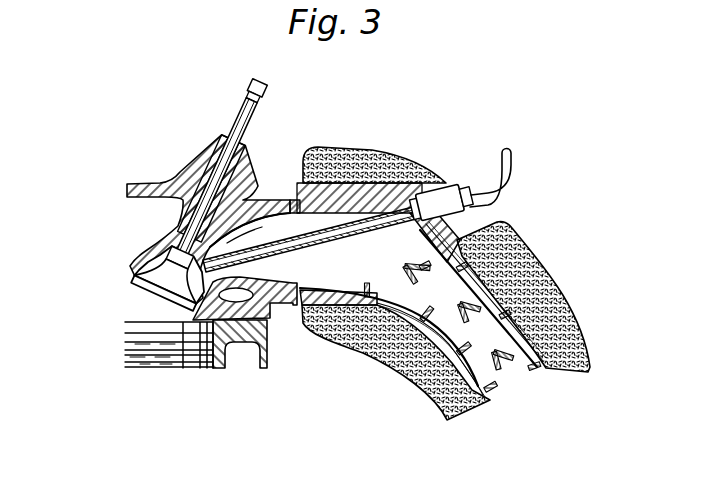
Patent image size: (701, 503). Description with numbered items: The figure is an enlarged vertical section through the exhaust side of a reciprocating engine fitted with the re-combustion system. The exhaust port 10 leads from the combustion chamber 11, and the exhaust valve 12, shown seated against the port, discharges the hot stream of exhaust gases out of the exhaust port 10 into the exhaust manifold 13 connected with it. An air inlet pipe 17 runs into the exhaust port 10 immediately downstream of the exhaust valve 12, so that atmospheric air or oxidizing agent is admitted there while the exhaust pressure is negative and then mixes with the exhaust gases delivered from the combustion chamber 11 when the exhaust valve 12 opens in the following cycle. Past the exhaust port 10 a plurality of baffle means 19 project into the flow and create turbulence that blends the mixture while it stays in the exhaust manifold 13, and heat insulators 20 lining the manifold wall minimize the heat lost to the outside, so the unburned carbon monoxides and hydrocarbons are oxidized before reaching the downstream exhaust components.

The exhaust port 10 is at (290, 200).
The combustion chamber 11 is at (147, 312).
The exhaust valve 12 is at (150, 297).
The exhaust manifold 13 is at (573, 321).
The air inlet pipe 17 is at (412, 194).
The baffle means 19 is at (463, 306).
The heat insulators 20 is at (488, 402).